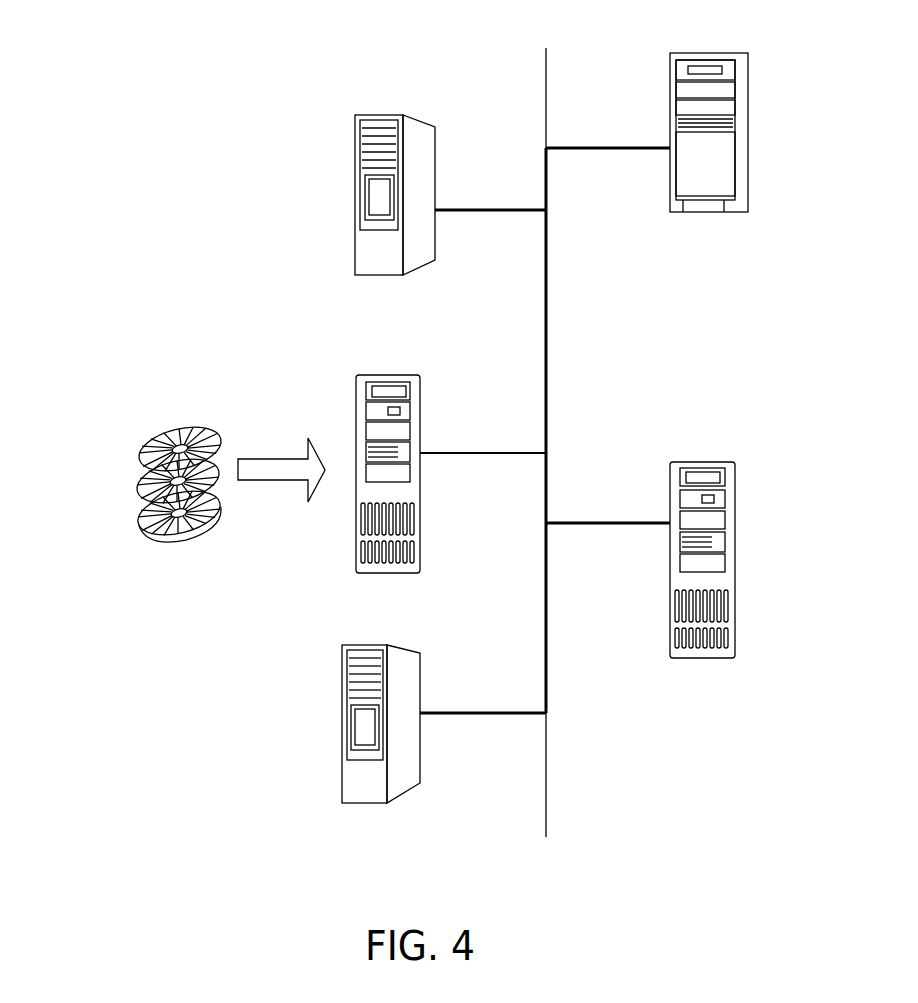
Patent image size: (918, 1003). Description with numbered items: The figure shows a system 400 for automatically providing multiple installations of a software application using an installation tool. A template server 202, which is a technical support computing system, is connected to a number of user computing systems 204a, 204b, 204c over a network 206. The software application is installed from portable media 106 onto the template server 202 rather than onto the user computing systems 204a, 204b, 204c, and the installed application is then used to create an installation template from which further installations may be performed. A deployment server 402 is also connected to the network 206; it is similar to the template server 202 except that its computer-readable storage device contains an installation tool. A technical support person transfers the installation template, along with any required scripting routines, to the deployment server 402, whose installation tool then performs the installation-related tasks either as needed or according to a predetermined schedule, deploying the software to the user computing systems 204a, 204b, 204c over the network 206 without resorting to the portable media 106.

The system 400 is at (88, 84).
The portable media 106 is at (138, 488).
The template server 202 is at (356, 507).
The user computing system 204a is at (340, 728).
The user computing system 204b is at (740, 555).
The user computing system 204c is at (750, 148).
The network 206 is at (548, 338).
The deployment server 402 is at (355, 210).